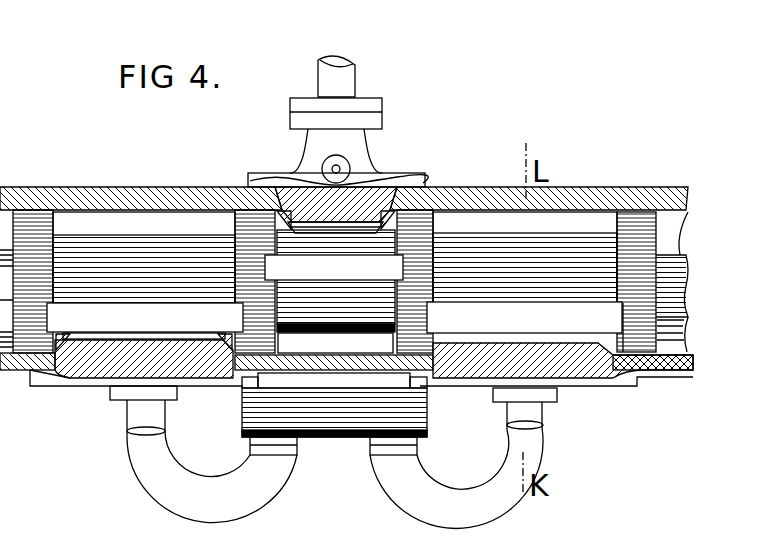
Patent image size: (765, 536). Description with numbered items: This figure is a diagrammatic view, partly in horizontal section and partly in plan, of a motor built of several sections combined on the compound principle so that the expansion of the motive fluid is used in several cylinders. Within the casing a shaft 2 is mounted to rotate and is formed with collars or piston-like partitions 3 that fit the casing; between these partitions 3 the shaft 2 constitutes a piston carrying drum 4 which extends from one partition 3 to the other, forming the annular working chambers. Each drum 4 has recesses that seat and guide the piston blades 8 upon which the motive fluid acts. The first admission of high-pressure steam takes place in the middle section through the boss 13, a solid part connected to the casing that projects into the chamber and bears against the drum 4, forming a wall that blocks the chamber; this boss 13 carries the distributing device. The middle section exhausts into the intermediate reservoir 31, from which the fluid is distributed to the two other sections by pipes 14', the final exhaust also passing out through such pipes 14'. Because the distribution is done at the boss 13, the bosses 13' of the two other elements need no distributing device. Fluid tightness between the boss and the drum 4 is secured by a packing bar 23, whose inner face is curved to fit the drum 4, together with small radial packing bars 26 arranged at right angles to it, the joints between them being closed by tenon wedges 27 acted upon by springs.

The shaft 2 is at (677, 262).
The partition 3 is at (38, 212).
The piston carrying drum 4 is at (152, 240).
The piston blade 8 is at (484, 322).
The boss 13 is at (338, 144).
The boss 13' is at (374, 388).
The pipe 14' is at (344, 457).
The packing bar 23 is at (187, 339).
The small packing bar 26 is at (52, 375).
The tenon wedge 27 is at (222, 348).
The intermediate reservoir 31 is at (358, 420).